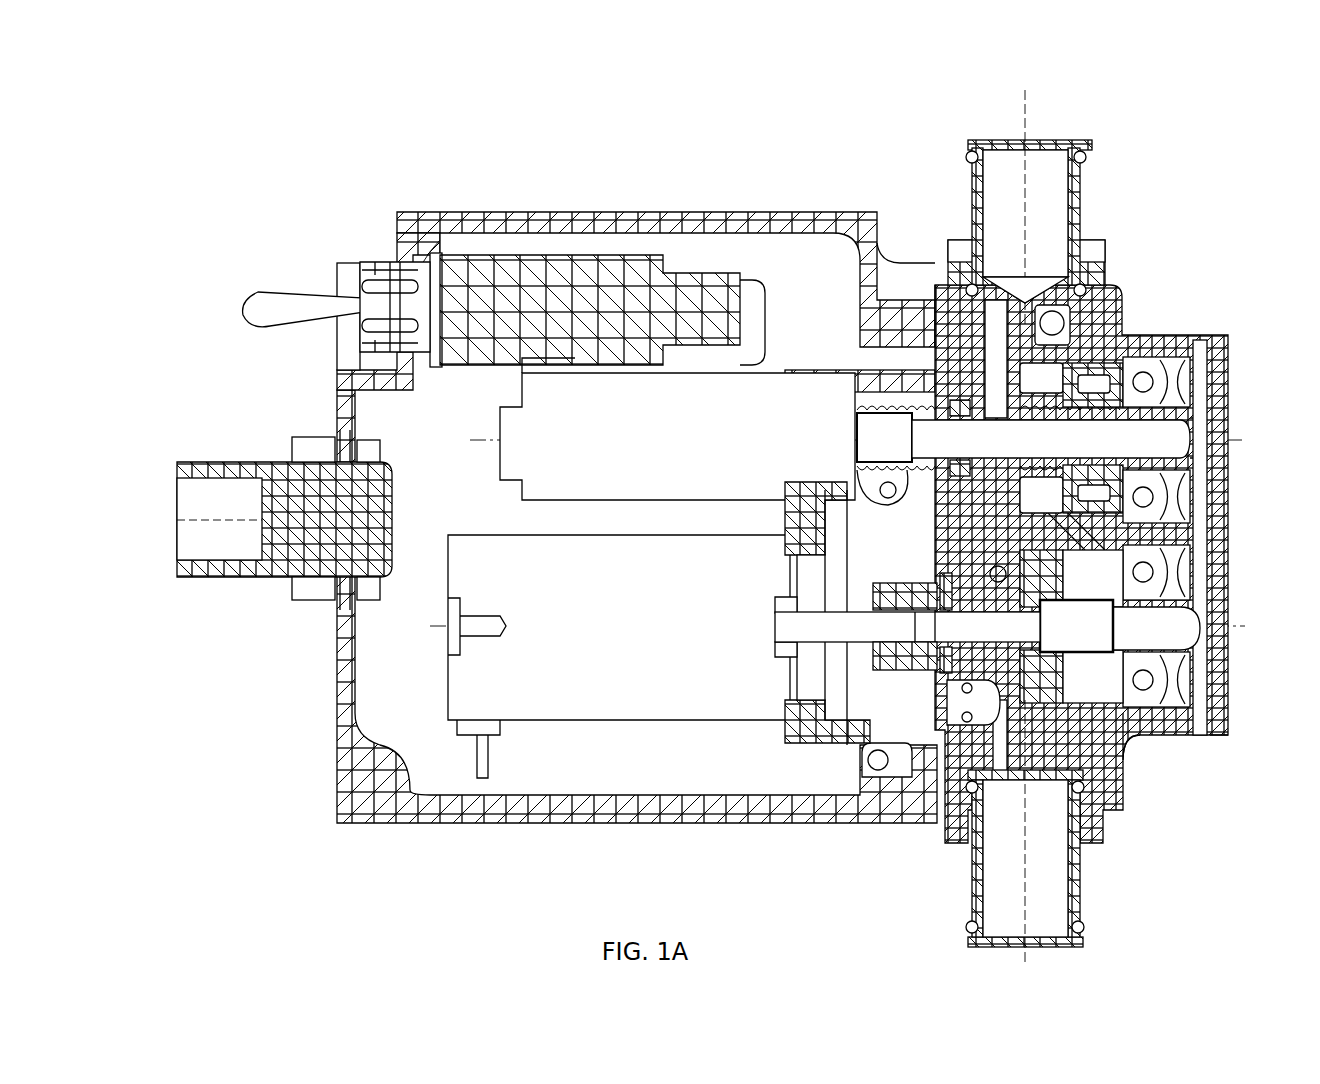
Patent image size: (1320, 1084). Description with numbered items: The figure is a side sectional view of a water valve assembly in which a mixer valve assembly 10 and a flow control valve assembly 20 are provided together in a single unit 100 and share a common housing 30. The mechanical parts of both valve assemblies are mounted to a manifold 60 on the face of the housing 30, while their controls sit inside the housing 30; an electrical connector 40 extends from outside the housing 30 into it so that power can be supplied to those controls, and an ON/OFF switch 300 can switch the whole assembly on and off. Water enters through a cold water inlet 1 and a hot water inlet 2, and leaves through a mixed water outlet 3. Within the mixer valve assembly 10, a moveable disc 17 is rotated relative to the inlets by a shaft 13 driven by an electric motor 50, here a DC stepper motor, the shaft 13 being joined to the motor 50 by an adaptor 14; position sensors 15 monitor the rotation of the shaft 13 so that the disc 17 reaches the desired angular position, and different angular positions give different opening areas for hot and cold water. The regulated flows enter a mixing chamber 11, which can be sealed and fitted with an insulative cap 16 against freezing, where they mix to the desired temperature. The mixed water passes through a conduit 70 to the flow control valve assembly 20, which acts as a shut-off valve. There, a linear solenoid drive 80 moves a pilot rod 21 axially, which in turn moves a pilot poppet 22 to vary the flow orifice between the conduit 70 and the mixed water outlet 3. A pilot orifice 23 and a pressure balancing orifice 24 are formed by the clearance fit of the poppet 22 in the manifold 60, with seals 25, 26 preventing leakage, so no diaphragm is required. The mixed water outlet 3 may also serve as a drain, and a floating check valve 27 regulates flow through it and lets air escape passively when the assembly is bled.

The single unit 100 is at (620, 160).
The mixed water outlet 3 is at (1022, 130).
The cold water inlet 1 is at (1050, 880).
The hot water inlet 2 is at (930, 790).
The mixer valve assembly 10 is at (1222, 767).
The mixing chamber 11 is at (1200, 688).
The shaft 13 is at (1205, 565).
The adaptor 14 is at (905, 790).
The position sensors 15 is at (862, 790).
The insulative cap 16 is at (1215, 470).
The moveable disc 17 is at (1110, 735).
The flow control valve assembly 20 is at (1225, 443).
The pilot rod 21 is at (1165, 385).
The pilot poppet 22 is at (1200, 438).
The pilot orifice 23 is at (1115, 355).
The pressure balancing orifice 24 is at (1135, 395).
The seal 25 is at (985, 265).
The seal 26 is at (943, 283).
The floating check valve 27 is at (1080, 243).
The housing 30 is at (406, 213).
The electrical connector 40 is at (190, 510).
The electric motor 50 is at (612, 720).
The manifold 60 is at (1100, 283).
The conduit 70 is at (1195, 410).
The linear solenoid drive 80 is at (490, 432).
The ON/OFF switch 300 is at (250, 300).